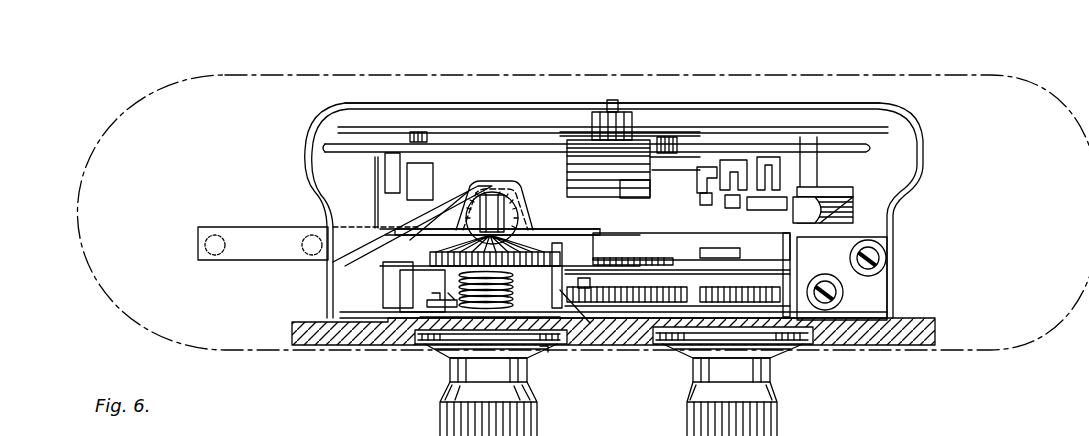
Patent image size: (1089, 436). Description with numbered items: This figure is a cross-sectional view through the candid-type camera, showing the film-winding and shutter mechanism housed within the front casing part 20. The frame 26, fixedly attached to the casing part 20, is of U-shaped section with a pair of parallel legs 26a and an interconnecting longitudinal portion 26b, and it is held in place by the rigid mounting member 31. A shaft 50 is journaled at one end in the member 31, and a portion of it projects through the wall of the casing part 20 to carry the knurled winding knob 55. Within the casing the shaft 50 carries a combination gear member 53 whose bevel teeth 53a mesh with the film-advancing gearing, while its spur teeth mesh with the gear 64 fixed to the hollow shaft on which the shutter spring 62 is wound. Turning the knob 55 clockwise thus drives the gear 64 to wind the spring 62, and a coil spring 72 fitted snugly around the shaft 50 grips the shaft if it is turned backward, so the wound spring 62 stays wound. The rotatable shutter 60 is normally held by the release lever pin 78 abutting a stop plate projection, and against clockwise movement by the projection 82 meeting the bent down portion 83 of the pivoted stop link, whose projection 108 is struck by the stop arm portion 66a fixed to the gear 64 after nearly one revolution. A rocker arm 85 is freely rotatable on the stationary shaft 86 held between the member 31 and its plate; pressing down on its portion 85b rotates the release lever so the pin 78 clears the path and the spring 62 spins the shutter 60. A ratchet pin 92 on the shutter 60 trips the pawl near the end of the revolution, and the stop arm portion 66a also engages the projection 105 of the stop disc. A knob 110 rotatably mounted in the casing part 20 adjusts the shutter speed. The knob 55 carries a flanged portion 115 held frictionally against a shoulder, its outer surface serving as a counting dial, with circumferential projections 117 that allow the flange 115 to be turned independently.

The front casing part 20 is at (362, 342).
The frame 26 is at (908, 243).
The frame legs 26a is at (322, 298).
The longitudinal portion 26b is at (880, 107).
The mounting member 31 is at (464, 205).
The shaft 50 is at (508, 204).
The combination gear member 53 is at (408, 262).
The bevel teeth 53a is at (522, 232).
The winding knob 55 is at (533, 428).
The shutter 60 is at (492, 148).
The spring 62 is at (636, 196).
The gear 64 is at (678, 262).
The projecting portion 66a is at (704, 168).
The coil spring 72 is at (432, 346).
The release lever pin 78 is at (752, 177).
The projection 82 is at (752, 192).
The bent down projecting portion 83 is at (712, 188).
The rocker arm 85 is at (410, 265).
The rocker arm portion 85b is at (240, 250).
The stationary shaft 86 is at (560, 292).
The ratchet pin 92 is at (584, 162).
The projecting portion 105 is at (656, 160).
The projection 108 is at (712, 172).
The knob 110 is at (770, 426).
The flanged portion 115 is at (460, 345).
The projections 117 is at (548, 354).